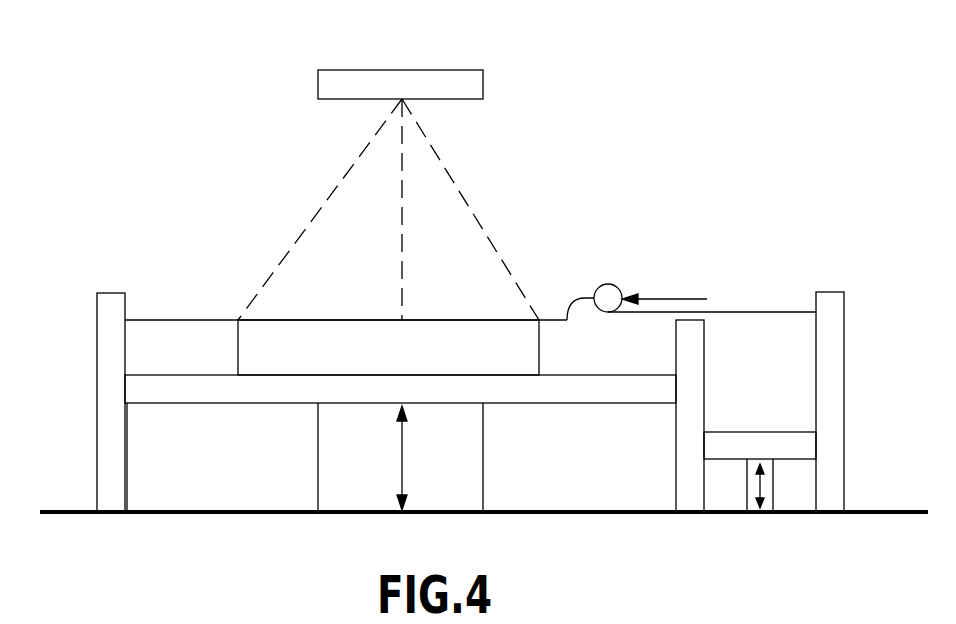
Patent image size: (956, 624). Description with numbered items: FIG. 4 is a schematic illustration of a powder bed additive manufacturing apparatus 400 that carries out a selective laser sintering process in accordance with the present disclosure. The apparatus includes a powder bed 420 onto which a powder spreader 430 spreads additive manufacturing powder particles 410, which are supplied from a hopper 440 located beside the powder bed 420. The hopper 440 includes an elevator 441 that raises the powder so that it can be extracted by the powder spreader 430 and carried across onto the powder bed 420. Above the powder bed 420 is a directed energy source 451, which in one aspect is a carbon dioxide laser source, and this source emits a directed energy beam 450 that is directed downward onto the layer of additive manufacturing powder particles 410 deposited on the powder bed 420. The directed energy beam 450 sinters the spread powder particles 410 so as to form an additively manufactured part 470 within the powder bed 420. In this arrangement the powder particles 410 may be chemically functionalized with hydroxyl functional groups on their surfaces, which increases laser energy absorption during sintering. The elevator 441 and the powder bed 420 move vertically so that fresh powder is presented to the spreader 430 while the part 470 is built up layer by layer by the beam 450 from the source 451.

The powder bed additive manufacturing apparatus 400 is at (676, 52).
The additive manufacturing powder particles 410 is at (780, 327).
The powder bed 420 is at (140, 387).
The powder spreader 430 is at (610, 292).
The hopper 440 is at (790, 395).
The elevator 441 is at (797, 448).
The directed energy beam 450 is at (468, 207).
The directed energy source 451 is at (483, 83).
The additively manufactured part 470 is at (238, 348).